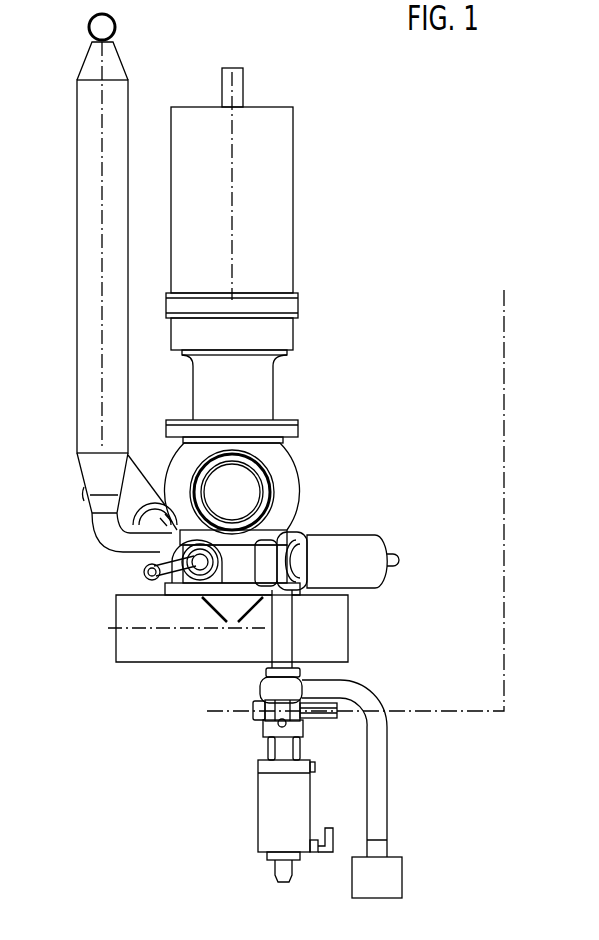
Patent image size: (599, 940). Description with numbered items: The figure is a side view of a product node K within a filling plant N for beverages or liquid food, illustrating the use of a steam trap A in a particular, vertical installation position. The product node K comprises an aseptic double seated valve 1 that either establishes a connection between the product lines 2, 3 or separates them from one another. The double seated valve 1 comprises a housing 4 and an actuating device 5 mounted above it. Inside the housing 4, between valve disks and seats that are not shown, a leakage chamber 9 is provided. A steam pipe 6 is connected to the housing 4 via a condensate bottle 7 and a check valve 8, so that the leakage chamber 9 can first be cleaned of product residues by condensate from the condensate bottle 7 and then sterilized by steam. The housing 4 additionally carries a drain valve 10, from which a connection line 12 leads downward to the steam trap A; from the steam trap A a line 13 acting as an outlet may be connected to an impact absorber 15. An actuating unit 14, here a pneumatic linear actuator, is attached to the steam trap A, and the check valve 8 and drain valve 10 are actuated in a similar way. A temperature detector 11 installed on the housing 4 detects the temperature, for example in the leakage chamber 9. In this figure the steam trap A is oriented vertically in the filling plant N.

The aseptic double seated valve 1 is at (335, 428).
The product line 2 is at (115, 656).
The product line 3 is at (259, 466).
The housing 4 is at (305, 487).
The actuating device 5 is at (294, 146).
The steam pipe 6 is at (89, 29).
The condensate bottle 7 is at (76, 184).
The check valve 8 is at (124, 512).
The leakage chamber 9 is at (230, 622).
The drain valve 10 is at (305, 530).
The temperature detector 11 is at (172, 582).
The connection line 12 is at (277, 622).
The line 13 is at (382, 758).
The actuating unit 14 is at (267, 803).
The impact absorber 15 is at (393, 879).
The steam trap A is at (243, 746).
The product node K is at (330, 398).
The filling plant N is at (480, 398).